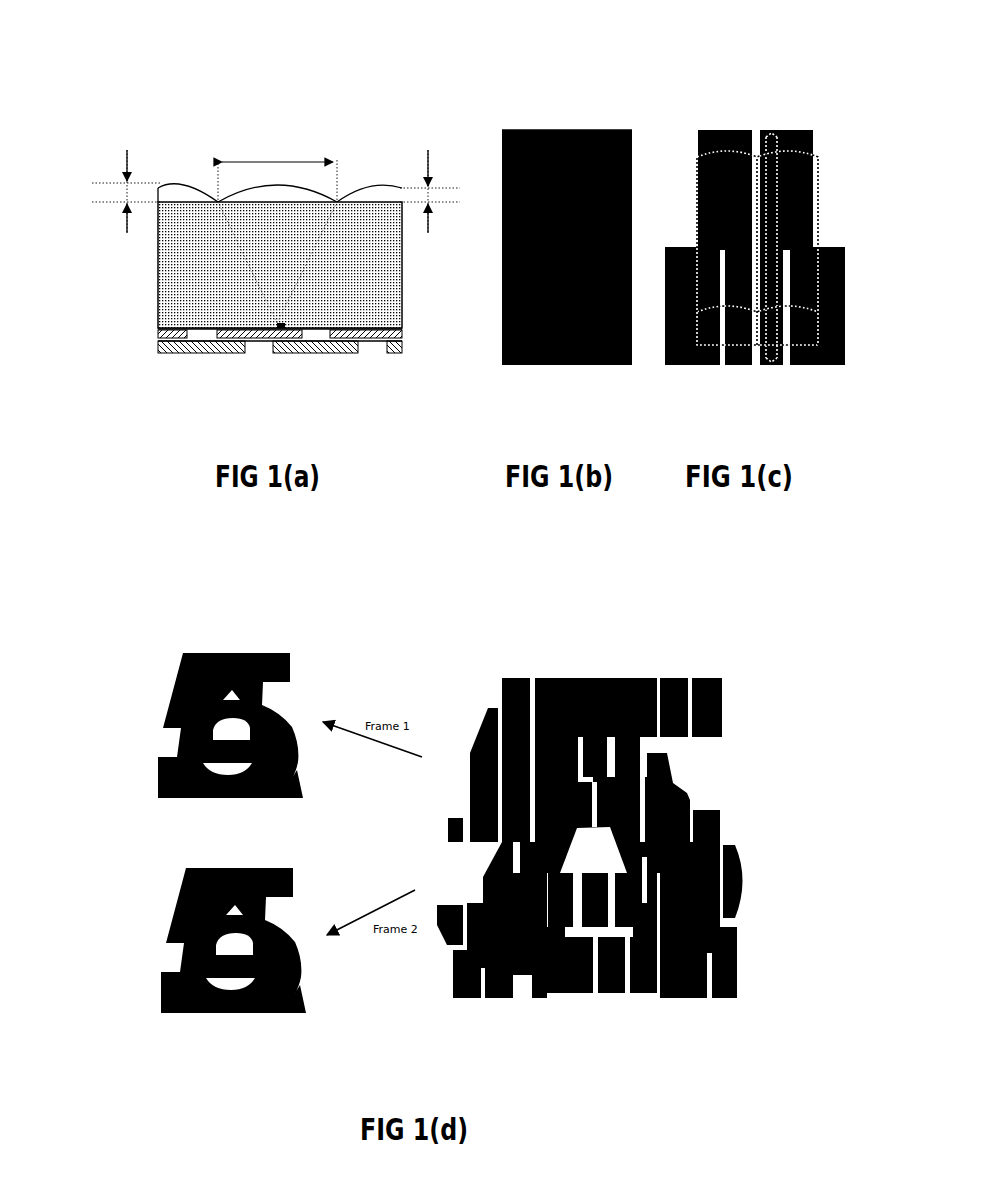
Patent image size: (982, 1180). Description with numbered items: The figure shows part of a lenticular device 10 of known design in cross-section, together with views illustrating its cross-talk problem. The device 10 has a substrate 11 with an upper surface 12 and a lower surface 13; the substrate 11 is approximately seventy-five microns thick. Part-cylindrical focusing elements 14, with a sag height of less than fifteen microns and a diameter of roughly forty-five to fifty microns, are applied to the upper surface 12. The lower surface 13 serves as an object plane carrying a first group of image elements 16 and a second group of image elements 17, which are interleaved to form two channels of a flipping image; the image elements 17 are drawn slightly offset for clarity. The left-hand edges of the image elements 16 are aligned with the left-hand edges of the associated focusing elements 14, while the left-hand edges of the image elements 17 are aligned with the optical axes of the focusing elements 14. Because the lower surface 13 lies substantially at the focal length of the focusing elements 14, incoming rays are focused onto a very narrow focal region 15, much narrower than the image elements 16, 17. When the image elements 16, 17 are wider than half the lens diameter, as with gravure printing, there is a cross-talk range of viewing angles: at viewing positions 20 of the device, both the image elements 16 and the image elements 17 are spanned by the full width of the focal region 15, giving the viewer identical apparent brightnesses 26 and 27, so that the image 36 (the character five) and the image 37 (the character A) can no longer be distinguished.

In FIG. 1A, the lenticular device 10 is at (125, 77).
In FIG. 1A, the substrate 11 is at (177, 283).
In FIG. 1A, the upper surface 12 is at (187, 202).
In FIG. 1A, the lower surface 13 is at (173, 327).
In FIG. 1A, the focusing elements 14 is at (180, 183).
In FIG. 1C, the focusing elements 14 is at (722, 152).
In FIG. 1A, the focal region 15 is at (280, 325).
In FIG. 1C, the focal region 15 is at (773, 358).
In FIG. 1A, the first group of image elements 16 is at (158, 342).
In FIG. 1C, the first group of image elements 16 is at (735, 130).
In FIG. 1D, the first group of image elements 16 is at (488, 708).
In FIG. 1A, the second group of image elements 17 is at (175, 353).
In FIG. 1C, the second group of image elements 17 is at (683, 365).
In FIG. 1D, the second group of image elements 17 is at (467, 1000).
In FIG. 1C, the positions of the device 20 is at (766, 37).
In FIG. 1B, the apparent brightness 26 is at (567, 267).
In FIG. 1B, the apparent brightness 27 is at (582, 130).
In FIG. 1D, the image 36 is at (170, 690).
In FIG. 1D, the image 37 is at (170, 905).